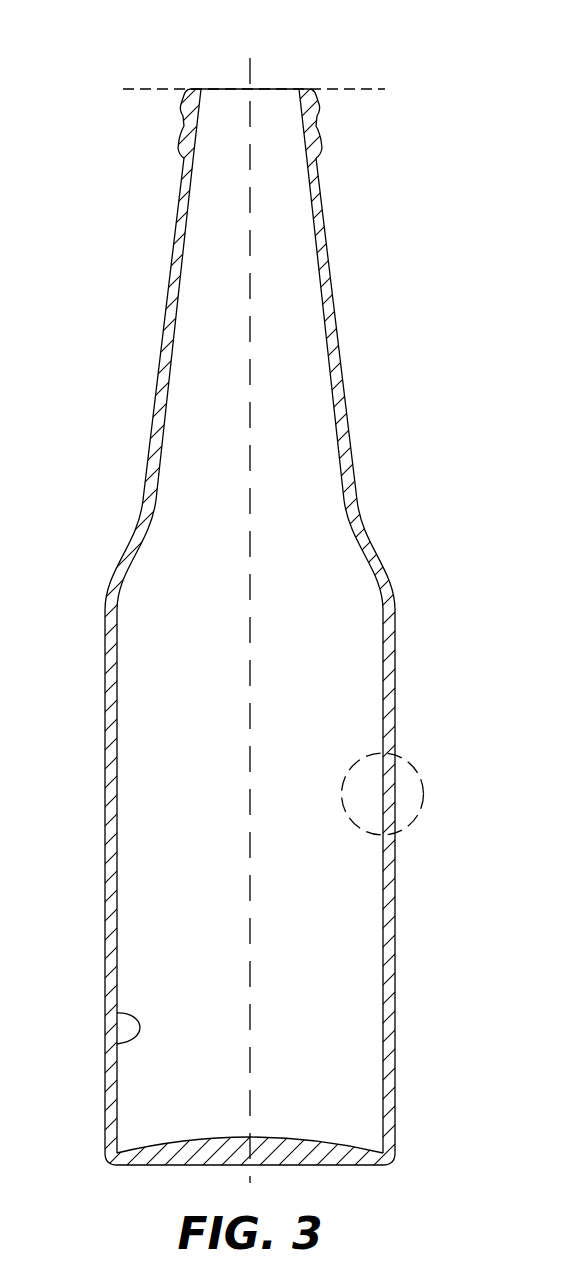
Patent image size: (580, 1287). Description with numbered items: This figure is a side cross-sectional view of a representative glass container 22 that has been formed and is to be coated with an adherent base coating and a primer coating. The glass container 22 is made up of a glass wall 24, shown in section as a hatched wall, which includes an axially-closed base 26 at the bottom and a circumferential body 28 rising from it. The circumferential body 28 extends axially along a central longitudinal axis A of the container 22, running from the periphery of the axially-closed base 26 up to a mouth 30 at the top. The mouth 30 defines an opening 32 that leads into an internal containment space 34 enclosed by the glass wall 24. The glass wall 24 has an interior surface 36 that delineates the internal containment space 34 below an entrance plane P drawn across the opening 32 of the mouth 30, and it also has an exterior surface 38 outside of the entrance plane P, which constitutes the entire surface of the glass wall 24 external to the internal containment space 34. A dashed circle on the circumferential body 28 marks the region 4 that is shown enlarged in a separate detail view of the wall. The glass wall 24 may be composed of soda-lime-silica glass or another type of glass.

The glass container 22 is at (411, 166).
The glass wall 24 is at (339, 357).
The axially-closed base 26 is at (333, 1150).
The circumferential body 28 is at (393, 952).
The mouth 30 is at (300, 89).
The opening 32 is at (205, 89).
The internal containment space 34 is at (198, 876).
The interior surface 36 is at (117, 1044).
The exterior surface 38 is at (105, 957).
The detail region of FIG. 4 is at (408, 762).
The central longitudinal axis A is at (250, 662).
The entrance plane P is at (140, 88).